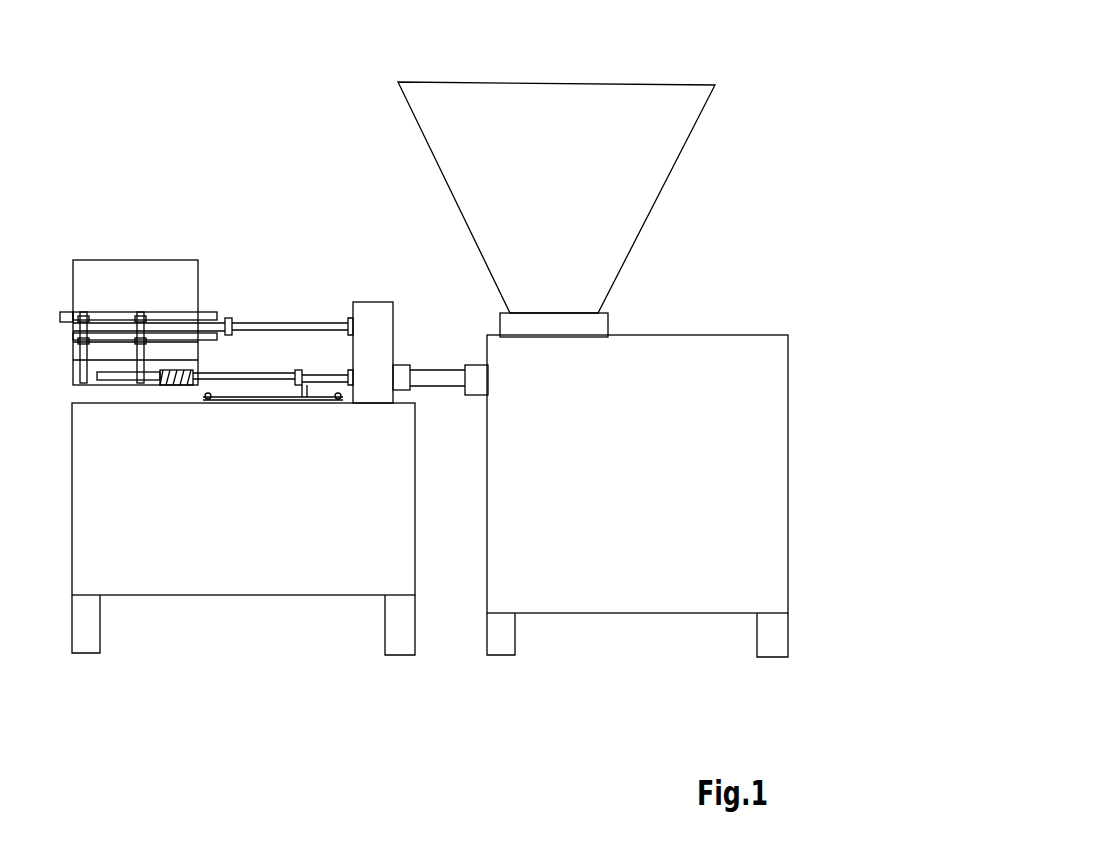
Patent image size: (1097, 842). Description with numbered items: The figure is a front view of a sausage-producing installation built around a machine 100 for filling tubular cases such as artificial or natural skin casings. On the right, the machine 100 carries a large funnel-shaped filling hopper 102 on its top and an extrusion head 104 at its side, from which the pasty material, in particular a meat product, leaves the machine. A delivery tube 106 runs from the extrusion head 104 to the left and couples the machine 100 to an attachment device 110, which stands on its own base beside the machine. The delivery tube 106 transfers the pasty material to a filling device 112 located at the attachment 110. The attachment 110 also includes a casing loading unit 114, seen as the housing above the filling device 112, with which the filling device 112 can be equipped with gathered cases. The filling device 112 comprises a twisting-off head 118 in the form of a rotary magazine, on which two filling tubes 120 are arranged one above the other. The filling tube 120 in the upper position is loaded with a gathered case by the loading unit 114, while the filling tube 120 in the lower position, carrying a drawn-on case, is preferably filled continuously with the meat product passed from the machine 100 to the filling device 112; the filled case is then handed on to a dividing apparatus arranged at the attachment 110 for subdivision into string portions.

The machine 100 is at (775, 222).
The filling hopper 102 is at (675, 100).
The extrusion head 104 is at (477, 375).
The delivery tube 106 is at (435, 378).
The attachment device 110 is at (190, 193).
The filling device 112 is at (332, 418).
The casing loading unit 114 is at (203, 293).
The twisting-off head 118 is at (370, 312).
The filling tube 120 is at (295, 322).